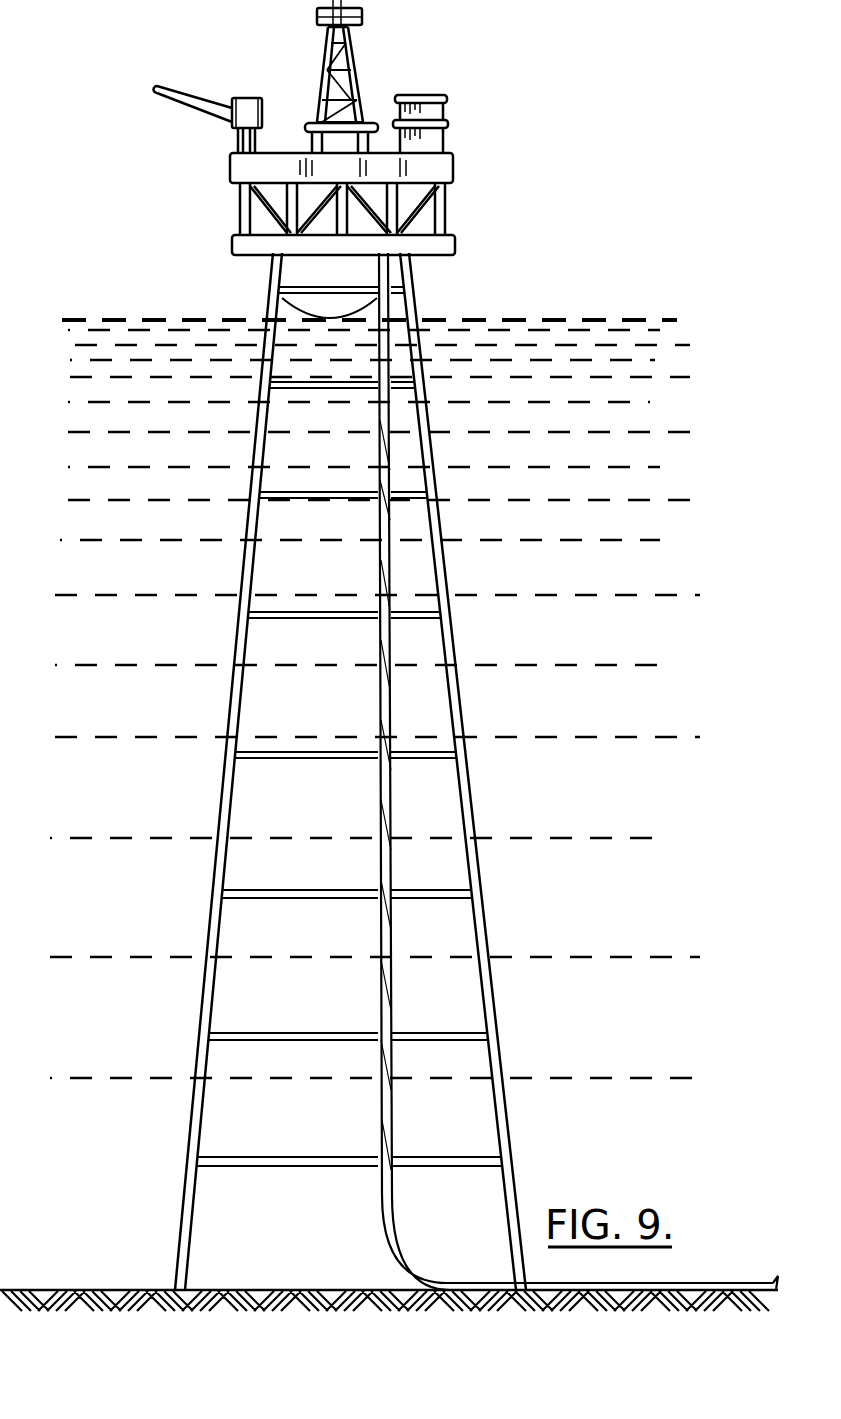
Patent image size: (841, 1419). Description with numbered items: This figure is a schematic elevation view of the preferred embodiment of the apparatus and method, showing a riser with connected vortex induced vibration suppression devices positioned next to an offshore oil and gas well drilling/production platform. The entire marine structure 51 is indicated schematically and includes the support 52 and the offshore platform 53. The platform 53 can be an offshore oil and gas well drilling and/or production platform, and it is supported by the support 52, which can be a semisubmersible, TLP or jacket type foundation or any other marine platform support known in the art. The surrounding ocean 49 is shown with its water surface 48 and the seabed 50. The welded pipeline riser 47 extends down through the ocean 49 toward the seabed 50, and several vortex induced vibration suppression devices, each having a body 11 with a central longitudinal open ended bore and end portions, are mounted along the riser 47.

The body 11 is at (388, 688).
The pipeline riser 47 is at (283, 312).
The water surface 48 is at (530, 318).
The ocean 49 is at (147, 635).
The seabed 50 is at (152, 1289).
The marine structure 51 is at (392, 645).
The support 52 is at (450, 643).
The offshore platform 53 is at (440, 170).